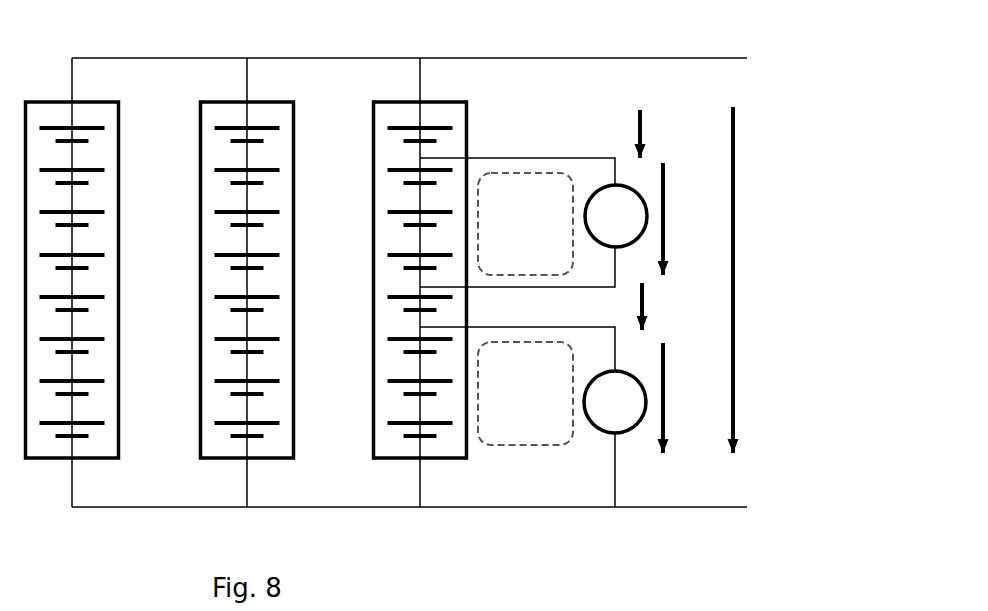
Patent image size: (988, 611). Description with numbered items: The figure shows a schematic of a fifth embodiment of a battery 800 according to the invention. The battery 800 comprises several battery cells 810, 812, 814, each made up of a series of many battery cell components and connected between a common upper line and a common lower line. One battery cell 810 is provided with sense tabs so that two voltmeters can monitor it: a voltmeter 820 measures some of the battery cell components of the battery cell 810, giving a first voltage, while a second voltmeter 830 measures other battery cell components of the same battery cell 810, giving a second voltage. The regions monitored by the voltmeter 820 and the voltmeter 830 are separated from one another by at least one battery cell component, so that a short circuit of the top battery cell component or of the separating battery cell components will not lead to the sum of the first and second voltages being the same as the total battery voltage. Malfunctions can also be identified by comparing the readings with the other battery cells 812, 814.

The battery 800 is at (821, 92).
The battery cell 810 is at (410, 102).
The battery cell 812 is at (206, 102).
The battery cell 814 is at (40, 102).
The voltmeter 820 is at (620, 185).
The voltmeter 830 is at (623, 433).